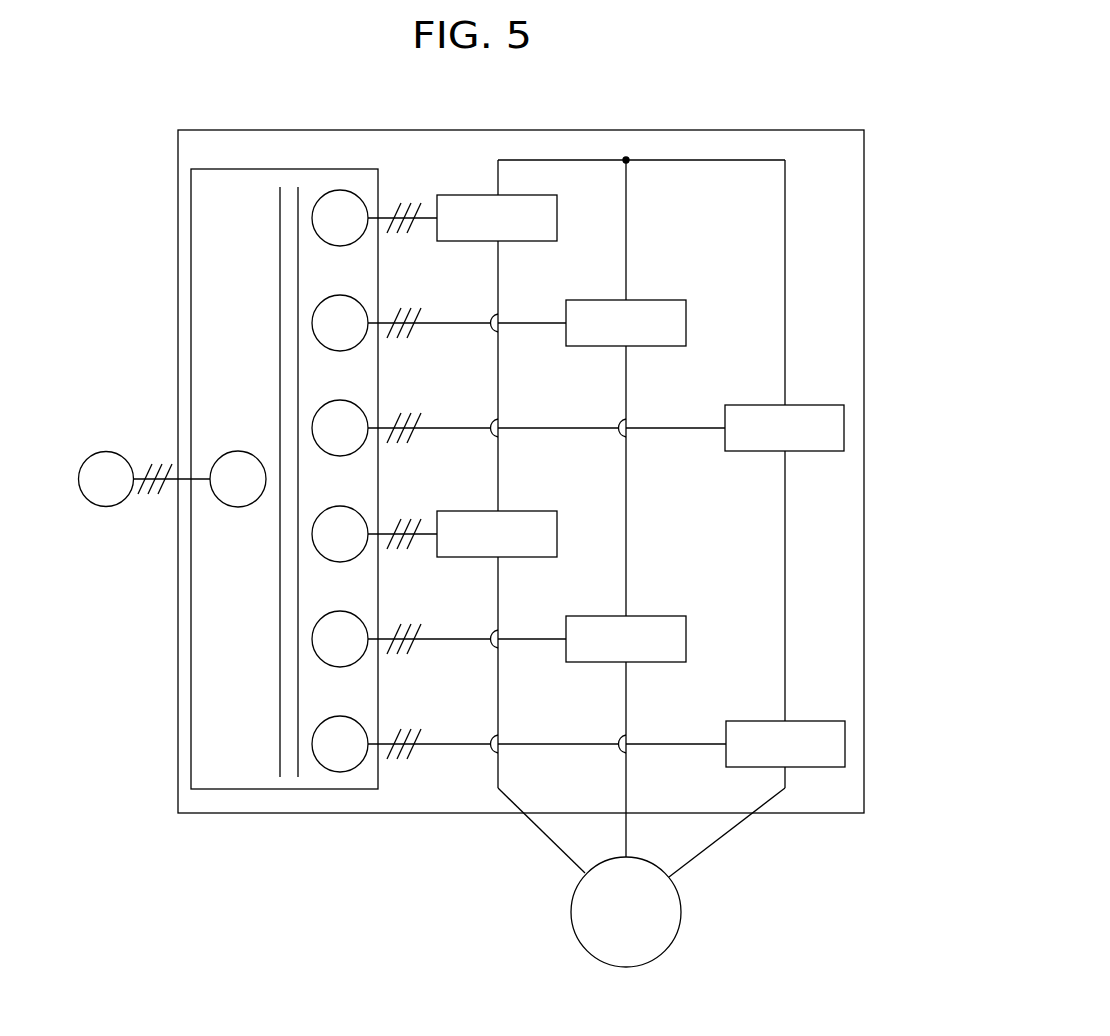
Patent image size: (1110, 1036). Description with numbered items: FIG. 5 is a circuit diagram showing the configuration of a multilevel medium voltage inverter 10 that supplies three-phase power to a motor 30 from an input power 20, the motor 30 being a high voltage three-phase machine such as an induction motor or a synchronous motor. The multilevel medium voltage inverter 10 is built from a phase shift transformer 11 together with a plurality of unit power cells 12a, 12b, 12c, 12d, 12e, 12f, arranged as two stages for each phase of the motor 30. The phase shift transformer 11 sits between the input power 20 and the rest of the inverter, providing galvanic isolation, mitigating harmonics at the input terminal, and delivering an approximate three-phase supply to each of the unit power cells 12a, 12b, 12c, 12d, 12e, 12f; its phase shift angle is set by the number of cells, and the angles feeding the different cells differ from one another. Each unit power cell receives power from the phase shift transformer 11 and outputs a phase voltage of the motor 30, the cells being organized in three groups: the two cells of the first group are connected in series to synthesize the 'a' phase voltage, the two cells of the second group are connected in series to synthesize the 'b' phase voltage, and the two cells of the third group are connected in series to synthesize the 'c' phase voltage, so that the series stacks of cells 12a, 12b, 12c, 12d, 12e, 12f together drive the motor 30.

The multilevel medium voltage inverter 10 is at (805, 130).
The phase shift transformer 11 is at (330, 169).
The unit power cell 12a is at (558, 208).
The unit power cell 12b is at (558, 524).
The unit power cell 12c is at (660, 299).
The unit power cell 12d is at (660, 615).
The unit power cell 12e is at (805, 403).
The unit power cell 12f is at (806, 720).
The input power 20 is at (108, 452).
The motor 30 is at (681, 908).